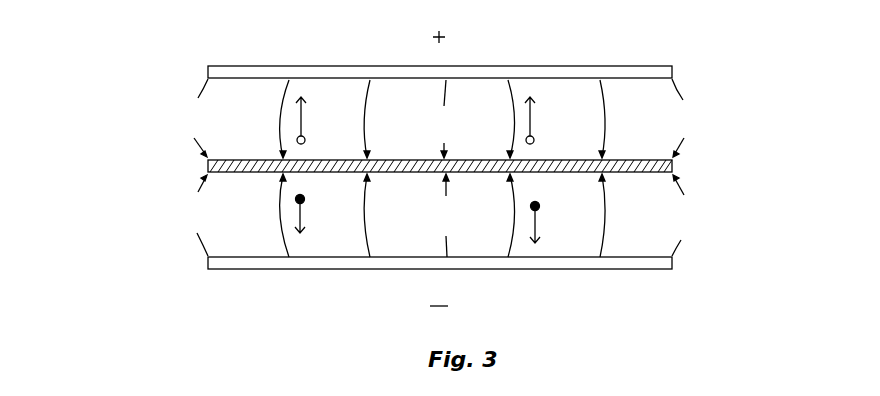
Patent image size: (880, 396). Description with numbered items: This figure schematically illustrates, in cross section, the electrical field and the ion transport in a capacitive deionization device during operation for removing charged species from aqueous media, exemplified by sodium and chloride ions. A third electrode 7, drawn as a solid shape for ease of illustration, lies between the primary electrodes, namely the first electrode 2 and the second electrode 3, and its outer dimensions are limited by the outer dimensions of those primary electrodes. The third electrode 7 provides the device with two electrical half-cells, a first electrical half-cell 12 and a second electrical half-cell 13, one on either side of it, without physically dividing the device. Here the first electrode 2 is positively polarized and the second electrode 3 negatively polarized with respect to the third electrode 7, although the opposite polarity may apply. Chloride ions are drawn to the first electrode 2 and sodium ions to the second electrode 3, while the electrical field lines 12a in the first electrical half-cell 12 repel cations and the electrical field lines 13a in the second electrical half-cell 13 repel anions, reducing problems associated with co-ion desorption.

The first electrode 2 is at (672, 75).
The second electrode 3 is at (672, 266).
The third electrode 7 is at (672, 170).
The first electrical half-cell 12 is at (86, 72).
The second electrical half-cell 13 is at (86, 167).
The electrical field lines 12a is at (208, 79).
The electrical field lines 13a is at (197, 233).